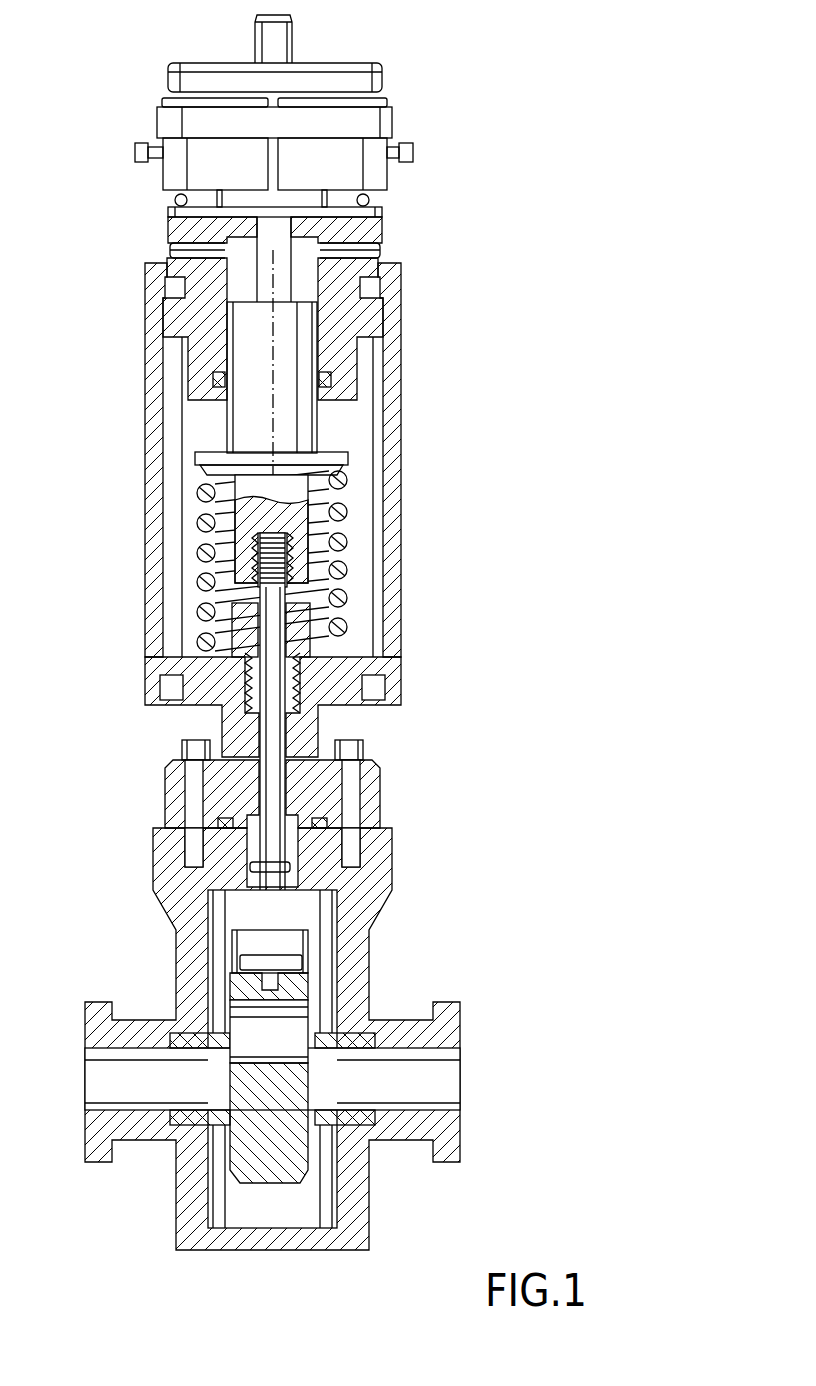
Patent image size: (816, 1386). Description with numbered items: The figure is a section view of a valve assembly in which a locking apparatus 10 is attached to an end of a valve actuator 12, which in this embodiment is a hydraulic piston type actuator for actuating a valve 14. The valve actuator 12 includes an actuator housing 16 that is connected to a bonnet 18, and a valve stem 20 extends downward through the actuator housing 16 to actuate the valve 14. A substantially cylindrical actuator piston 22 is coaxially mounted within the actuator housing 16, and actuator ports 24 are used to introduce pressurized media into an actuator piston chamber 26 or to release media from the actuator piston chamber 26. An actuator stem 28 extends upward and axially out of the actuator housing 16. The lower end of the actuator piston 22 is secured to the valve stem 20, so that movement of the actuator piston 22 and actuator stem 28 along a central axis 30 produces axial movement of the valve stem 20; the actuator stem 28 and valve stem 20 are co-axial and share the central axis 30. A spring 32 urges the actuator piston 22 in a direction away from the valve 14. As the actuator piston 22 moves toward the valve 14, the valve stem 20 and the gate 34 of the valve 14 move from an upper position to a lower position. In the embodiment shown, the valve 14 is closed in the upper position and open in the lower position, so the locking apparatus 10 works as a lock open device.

The locking apparatus 10 is at (321, 109).
The valve actuator 12 is at (290, 479).
The valve 14 is at (115, 921).
The actuator housing 16 is at (399, 548).
The bonnet 18 is at (420, 785).
The valve stem 20 is at (266, 613).
The actuator piston 22 is at (246, 338).
The actuator ports 24 is at (180, 250).
The actuator piston chamber 26 is at (306, 278).
The actuator stem 28 is at (293, 40).
The central axis 30 is at (272, 402).
The spring 32 is at (196, 522).
The gate 34 is at (248, 1157).